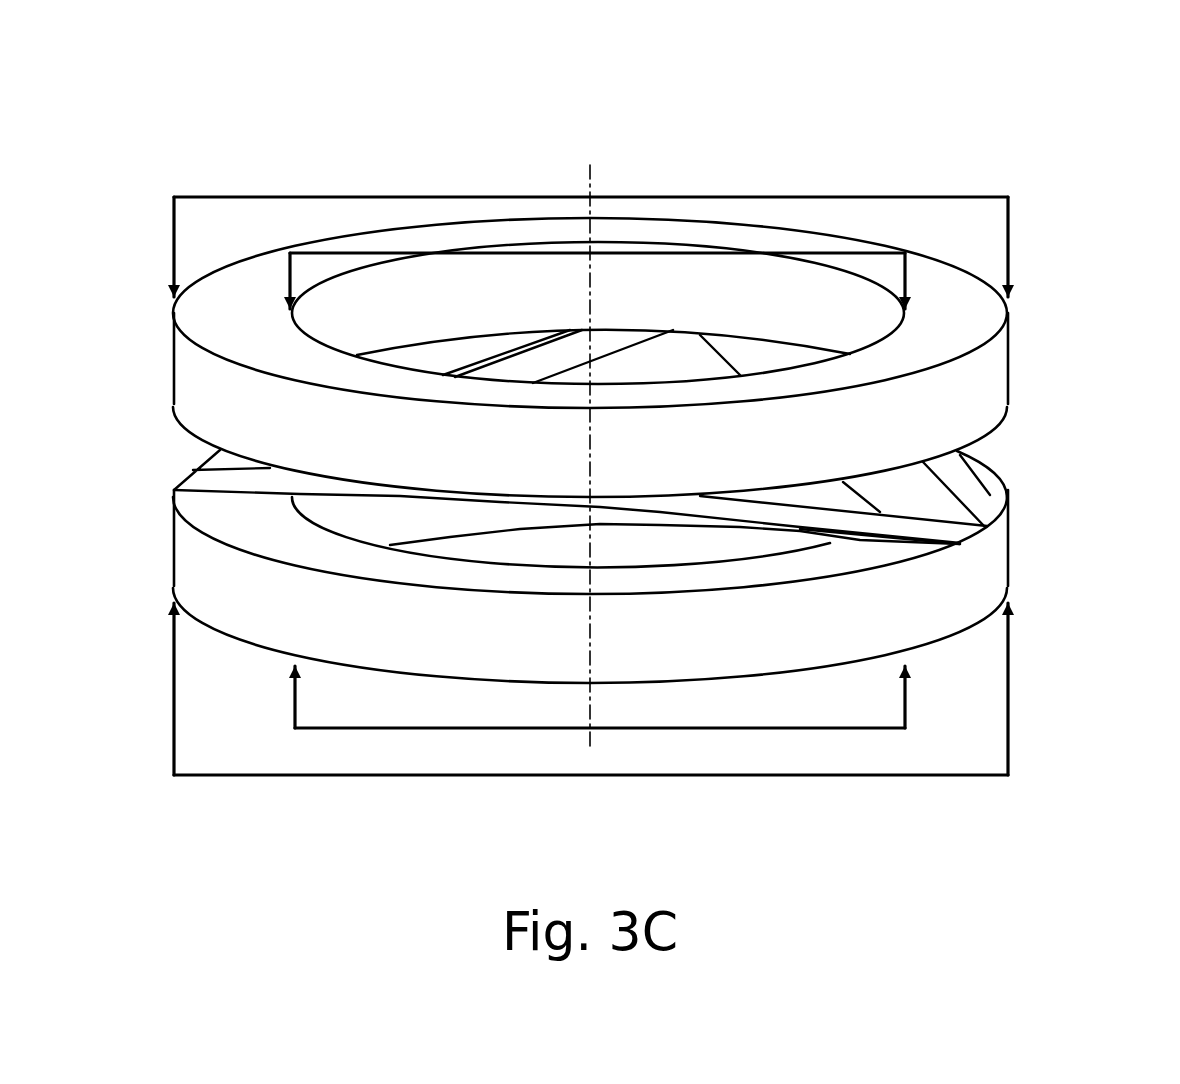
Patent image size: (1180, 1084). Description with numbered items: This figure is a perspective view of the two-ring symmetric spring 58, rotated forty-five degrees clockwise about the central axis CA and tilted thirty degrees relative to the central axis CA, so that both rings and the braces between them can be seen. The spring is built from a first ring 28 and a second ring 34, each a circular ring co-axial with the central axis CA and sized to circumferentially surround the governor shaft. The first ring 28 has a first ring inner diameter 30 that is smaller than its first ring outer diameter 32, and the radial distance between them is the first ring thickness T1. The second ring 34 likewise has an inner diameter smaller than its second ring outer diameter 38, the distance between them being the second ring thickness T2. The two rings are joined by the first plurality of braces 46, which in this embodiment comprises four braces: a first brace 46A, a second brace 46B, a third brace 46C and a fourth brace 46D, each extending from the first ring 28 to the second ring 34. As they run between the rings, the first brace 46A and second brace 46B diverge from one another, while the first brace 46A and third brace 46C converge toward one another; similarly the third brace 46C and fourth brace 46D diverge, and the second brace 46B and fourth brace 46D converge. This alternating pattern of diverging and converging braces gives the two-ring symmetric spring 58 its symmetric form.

The first ring 28 is at (1010, 352).
The second ring 34 is at (1010, 531).
The first plurality of braces 46 is at (620, 358).
The first brace 46A is at (207, 477).
The second brace 46B is at (900, 527).
The third brace 46C is at (532, 362).
The fourth brace 46D is at (943, 470).
The first ring inner diameter 30 is at (815, 255).
The first ring outer diameter 32 is at (760, 197).
The second ring outer diameter 38 is at (652, 775).
The two-ring symmetric spring 58 is at (1020, 118).
The central axis CA is at (590, 442).
The first ring thickness T1 is at (310, 340).
The second ring thickness T2 is at (310, 523).